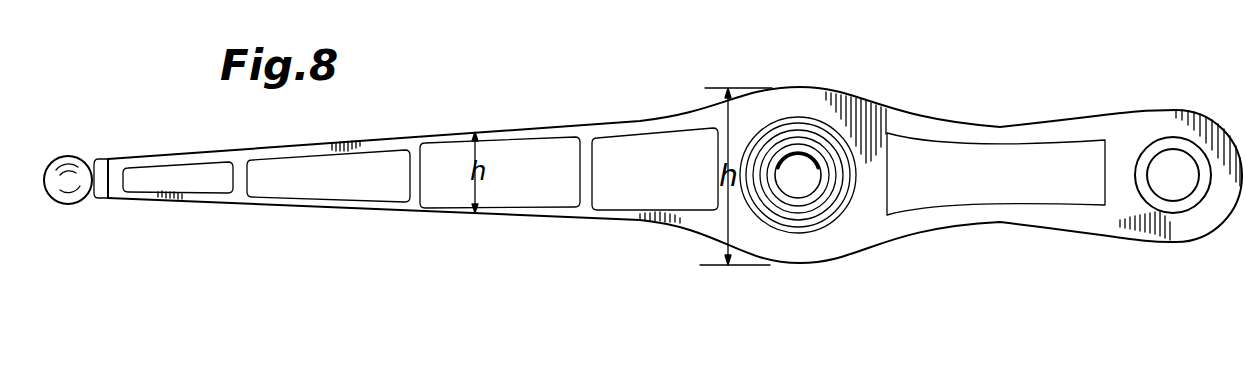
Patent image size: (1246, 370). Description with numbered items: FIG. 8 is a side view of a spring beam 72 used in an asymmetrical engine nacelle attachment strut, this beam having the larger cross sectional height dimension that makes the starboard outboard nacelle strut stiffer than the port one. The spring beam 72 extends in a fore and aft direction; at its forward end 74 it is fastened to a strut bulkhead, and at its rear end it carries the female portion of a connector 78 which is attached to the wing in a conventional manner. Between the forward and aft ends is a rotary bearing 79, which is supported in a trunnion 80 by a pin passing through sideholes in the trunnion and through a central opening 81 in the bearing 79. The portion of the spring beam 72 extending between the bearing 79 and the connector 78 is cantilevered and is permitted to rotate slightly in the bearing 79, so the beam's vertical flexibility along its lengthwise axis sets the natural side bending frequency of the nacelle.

The spring beam 72 is at (1018, 125).
The forward end 74 is at (106, 158).
The connector 78 is at (1188, 110).
The rotary bearing 79 is at (820, 133).
The trunnion 80 is at (773, 222).
The central opening 81 is at (798, 177).